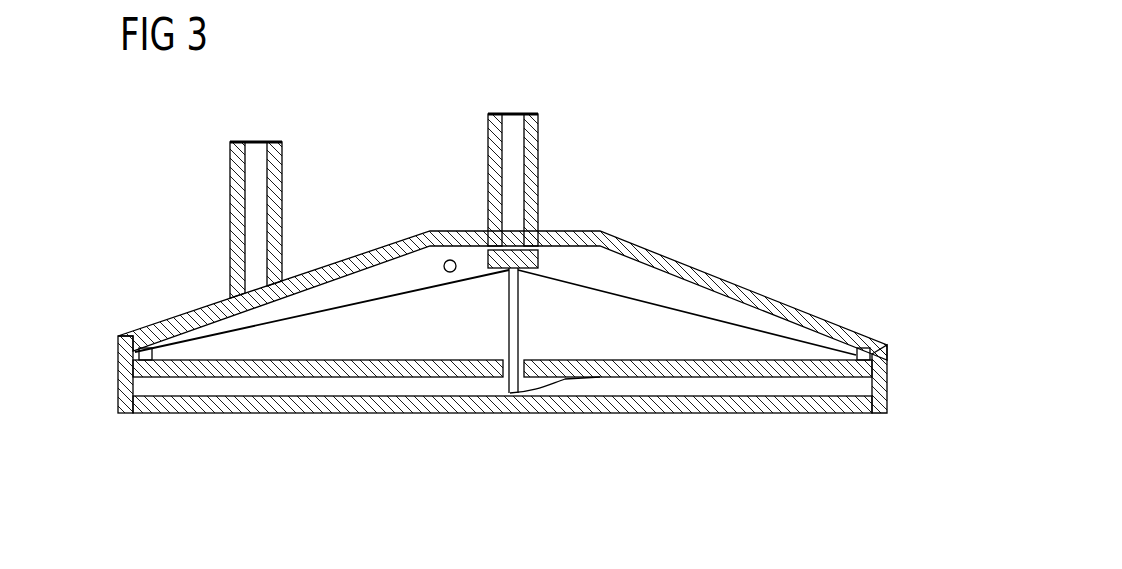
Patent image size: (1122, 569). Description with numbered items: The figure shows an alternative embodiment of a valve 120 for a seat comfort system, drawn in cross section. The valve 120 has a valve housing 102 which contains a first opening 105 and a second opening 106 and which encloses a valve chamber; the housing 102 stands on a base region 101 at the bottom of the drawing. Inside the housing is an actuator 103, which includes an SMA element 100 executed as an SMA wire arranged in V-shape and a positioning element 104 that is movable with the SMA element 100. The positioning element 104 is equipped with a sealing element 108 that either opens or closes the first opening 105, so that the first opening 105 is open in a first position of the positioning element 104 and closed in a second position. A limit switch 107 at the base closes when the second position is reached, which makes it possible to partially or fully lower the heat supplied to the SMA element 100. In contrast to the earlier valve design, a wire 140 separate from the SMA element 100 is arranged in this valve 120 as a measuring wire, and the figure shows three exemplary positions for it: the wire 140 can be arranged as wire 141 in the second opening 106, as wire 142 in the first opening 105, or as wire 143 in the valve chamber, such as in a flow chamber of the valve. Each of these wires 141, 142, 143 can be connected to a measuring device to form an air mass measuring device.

The SMA element 100 is at (268, 338).
The housing base 101 is at (864, 348).
The valve housing 102 is at (745, 287).
The actuator 103 is at (502, 315).
The positioning element 104 is at (519, 322).
The first opening 105 is at (514, 120).
The second opening 106 is at (256, 148).
The limit switch 107 is at (542, 384).
The sealing element 108 is at (540, 262).
The valve 120 is at (678, 175).
The wire 140 is at (242, 207).
The wire 141 is at (258, 210).
The wire 142 is at (510, 167).
The wire 143 is at (446, 259).